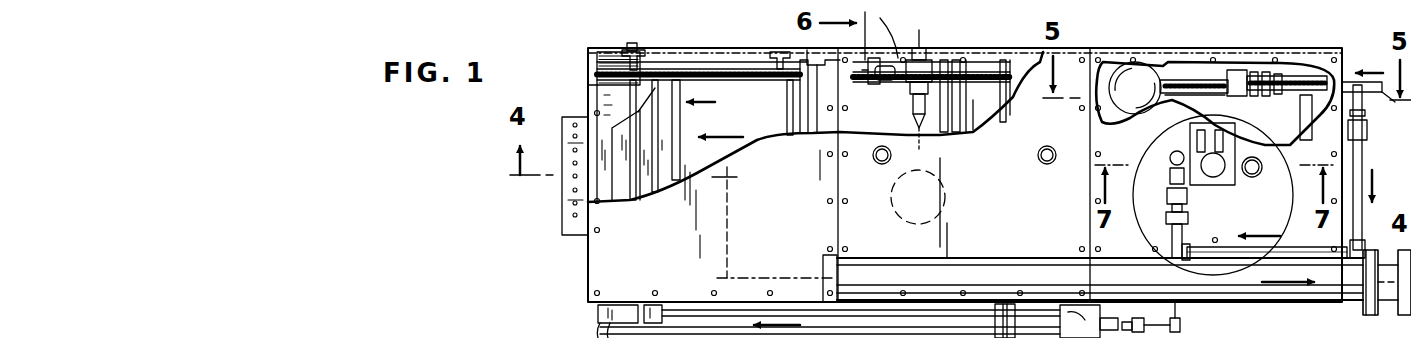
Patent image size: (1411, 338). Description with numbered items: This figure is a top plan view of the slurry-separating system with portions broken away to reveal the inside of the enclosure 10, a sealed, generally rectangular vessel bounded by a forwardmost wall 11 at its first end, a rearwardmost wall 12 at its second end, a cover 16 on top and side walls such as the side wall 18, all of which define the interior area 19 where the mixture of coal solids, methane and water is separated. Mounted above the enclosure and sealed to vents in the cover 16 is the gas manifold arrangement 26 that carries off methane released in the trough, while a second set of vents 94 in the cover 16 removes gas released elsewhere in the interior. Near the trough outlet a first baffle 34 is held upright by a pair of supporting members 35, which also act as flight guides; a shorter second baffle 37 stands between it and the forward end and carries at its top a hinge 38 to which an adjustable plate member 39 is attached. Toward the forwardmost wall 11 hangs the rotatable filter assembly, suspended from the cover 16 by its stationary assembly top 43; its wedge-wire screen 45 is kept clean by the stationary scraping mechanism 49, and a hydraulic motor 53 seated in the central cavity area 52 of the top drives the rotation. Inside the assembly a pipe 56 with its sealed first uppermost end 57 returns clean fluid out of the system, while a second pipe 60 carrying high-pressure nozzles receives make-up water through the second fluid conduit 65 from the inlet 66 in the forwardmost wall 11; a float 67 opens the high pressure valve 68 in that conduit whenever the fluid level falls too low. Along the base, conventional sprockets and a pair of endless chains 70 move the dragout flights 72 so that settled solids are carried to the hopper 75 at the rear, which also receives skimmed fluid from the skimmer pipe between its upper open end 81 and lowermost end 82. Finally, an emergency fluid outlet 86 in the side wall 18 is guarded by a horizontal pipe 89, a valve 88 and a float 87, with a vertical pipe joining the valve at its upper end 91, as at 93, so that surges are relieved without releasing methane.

The enclosure 10 is at (540, 236).
The forwardmost wall 11 is at (1343, 161).
The rearwardmost wall 12 is at (586, 265).
The cover 16 is at (600, 277).
The side wall 18 is at (740, 50).
The interior area 19 is at (752, 135).
The gas manifold arrangement 26 is at (977, 268).
The first baffle 34 is at (972, 128).
The supporting members 35 is at (982, 58).
The second baffle 37 is at (1020, 128).
The hinge 38 is at (979, 186).
The plate member 39 is at (1008, 58).
The assembly top 43 is at (1134, 143).
The wedge-wire screen 45 is at (1192, 97).
The scraping mechanism 49 is at (1265, 166).
The cavity area 52 is at (1192, 136).
The hydraulic motor 53 is at (1215, 176).
The pipe 56 is at (1266, 173).
The first uppermost end 57 is at (1258, 178).
The second pipe 60 is at (1170, 153).
The second fluid conduit 65 is at (1263, 252).
The inlet 66 is at (1372, 98).
The float 67 is at (1133, 70).
The high pressure valve 68 is at (1242, 68).
The endless chains 70 is at (708, 69).
The dragout flights 72 is at (666, 90).
The hopper 75 is at (556, 197).
The upper open end 81 is at (1170, 282).
The lowermost end 82 is at (598, 320).
The emergency fluid outlet 86 is at (919, 44).
The float 87 is at (893, 214).
The valve 88 is at (914, 108).
The horizontal pipe 89 is at (940, 60).
The upper end 91 is at (886, 76).
The connection 93 is at (888, 40).
The second set of vents 94 is at (881, 164).